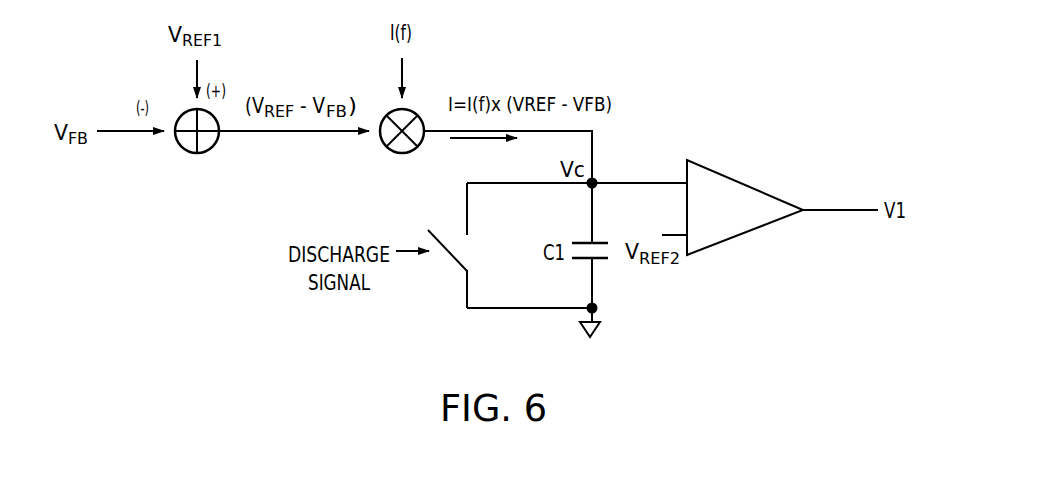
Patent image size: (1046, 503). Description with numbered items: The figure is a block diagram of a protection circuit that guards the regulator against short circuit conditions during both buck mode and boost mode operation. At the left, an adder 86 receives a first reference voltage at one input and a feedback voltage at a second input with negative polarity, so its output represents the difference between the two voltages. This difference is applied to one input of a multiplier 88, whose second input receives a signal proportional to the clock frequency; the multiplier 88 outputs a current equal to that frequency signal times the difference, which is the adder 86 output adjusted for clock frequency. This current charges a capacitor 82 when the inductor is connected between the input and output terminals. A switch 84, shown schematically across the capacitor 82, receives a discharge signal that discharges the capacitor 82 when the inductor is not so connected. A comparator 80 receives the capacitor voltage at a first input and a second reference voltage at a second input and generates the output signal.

The comparator 80 is at (755, 186).
The capacitor 82 is at (597, 243).
The switch 84 is at (456, 262).
The adder 86 is at (185, 150).
The multiplier 88 is at (386, 146).